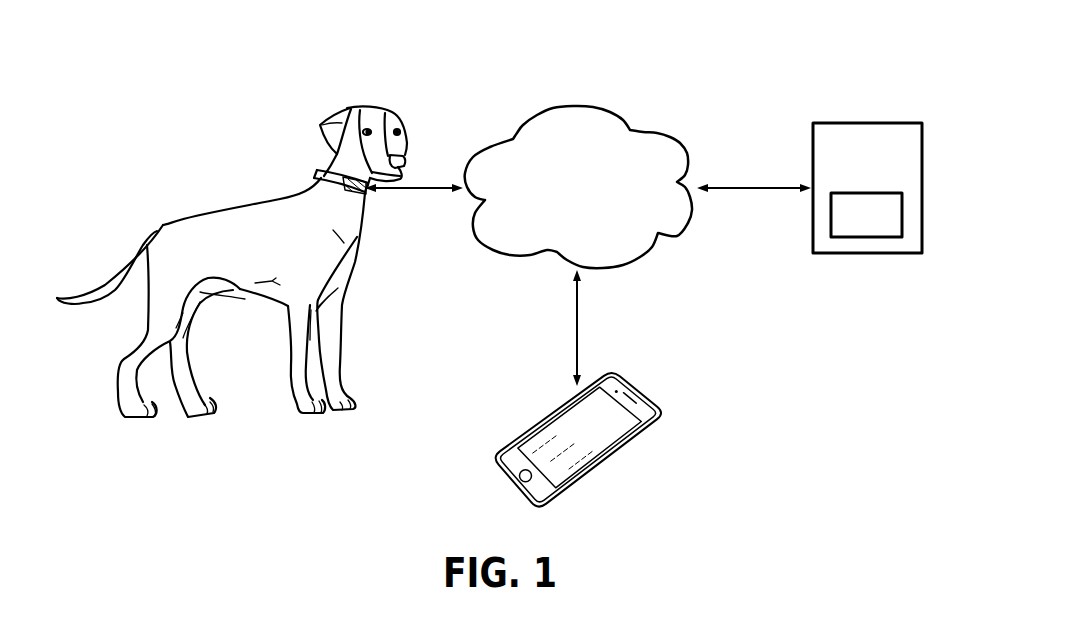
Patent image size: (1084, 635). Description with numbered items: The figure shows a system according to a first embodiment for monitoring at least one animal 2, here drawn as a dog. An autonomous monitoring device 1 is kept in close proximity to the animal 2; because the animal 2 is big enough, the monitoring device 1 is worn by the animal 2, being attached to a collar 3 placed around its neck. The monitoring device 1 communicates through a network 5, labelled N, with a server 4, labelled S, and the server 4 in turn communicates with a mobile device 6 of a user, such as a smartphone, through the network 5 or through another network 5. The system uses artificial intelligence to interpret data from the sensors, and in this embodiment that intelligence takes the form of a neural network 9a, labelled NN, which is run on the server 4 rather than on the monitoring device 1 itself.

The monitoring device 1 is at (352, 204).
The animal 2 is at (393, 88).
The collar 3 is at (321, 175).
The server 4 is at (893, 121).
The network 5 is at (651, 131).
The mobile device 6 is at (639, 387).
The neural network 9a is at (873, 238).